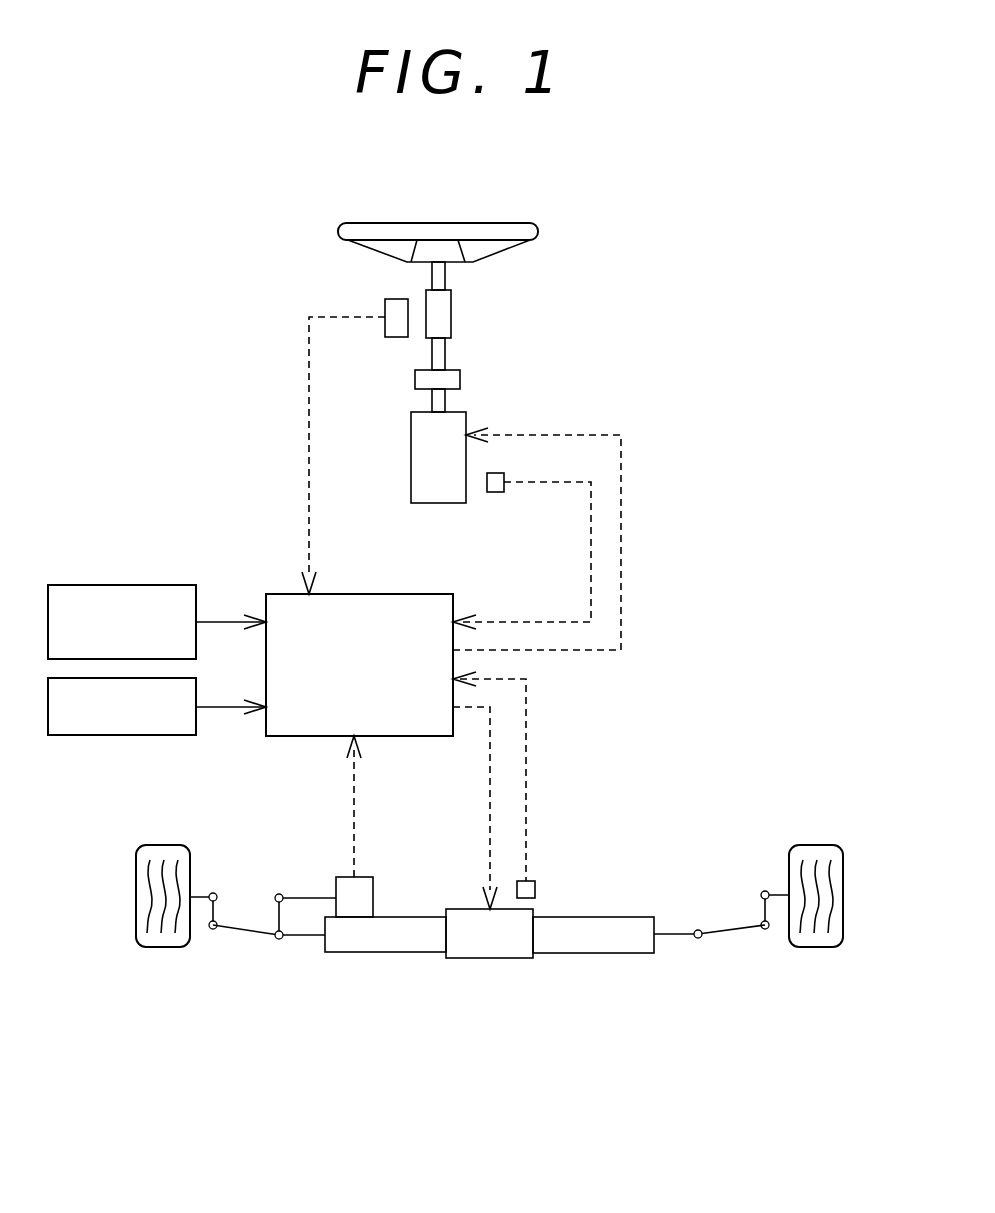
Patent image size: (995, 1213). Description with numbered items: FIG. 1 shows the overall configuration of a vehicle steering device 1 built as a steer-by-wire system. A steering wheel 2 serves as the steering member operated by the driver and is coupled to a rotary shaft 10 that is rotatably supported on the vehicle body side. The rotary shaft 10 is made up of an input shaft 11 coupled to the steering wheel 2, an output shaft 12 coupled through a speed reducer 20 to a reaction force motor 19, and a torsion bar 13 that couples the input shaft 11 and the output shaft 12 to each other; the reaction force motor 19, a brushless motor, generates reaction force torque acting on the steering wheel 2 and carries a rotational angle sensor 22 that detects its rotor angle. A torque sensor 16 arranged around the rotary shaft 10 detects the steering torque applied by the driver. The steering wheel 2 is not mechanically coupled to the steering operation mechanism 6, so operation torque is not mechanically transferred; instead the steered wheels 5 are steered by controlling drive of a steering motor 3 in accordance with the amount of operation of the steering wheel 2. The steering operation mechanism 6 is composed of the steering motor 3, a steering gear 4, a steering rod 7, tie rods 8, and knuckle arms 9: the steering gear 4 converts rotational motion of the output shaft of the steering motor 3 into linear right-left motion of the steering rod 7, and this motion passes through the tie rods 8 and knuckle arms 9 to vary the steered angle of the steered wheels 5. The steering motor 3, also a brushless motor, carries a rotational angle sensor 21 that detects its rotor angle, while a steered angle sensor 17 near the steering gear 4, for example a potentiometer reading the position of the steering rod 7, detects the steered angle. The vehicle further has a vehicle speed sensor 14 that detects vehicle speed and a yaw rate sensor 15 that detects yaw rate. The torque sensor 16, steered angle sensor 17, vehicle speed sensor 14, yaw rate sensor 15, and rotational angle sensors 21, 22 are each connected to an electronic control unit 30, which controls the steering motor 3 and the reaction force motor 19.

The vehicle steering device 1 is at (652, 263).
The steering wheel 2 is at (530, 234).
The steering motor 3 is at (485, 958).
The steering gear 4 is at (385, 952).
The steered wheels 5 is at (162, 947).
The steering operation mechanism 6 is at (532, 1000).
The steering rod 7 is at (303, 935).
The tie rods 8 is at (243, 935).
The knuckle arms 9 is at (215, 912).
The rotary shaft 10 is at (532, 268).
The input shaft 11 is at (443, 287).
The output shaft 12 is at (445, 352).
The torsion bar 13 is at (451, 317).
The vehicle speed sensor 14 is at (108, 585).
The yaw rate sensor 15 is at (108, 735).
The torque sensor 16 is at (385, 308).
The steered angle sensor 17 is at (367, 890).
The reaction force motor 19 is at (423, 468).
The speed reducer 20 is at (415, 382).
The rotational angle sensor 21 is at (535, 890).
The rotational angle sensor 22 is at (497, 473).
The electronic control unit 30 is at (408, 594).